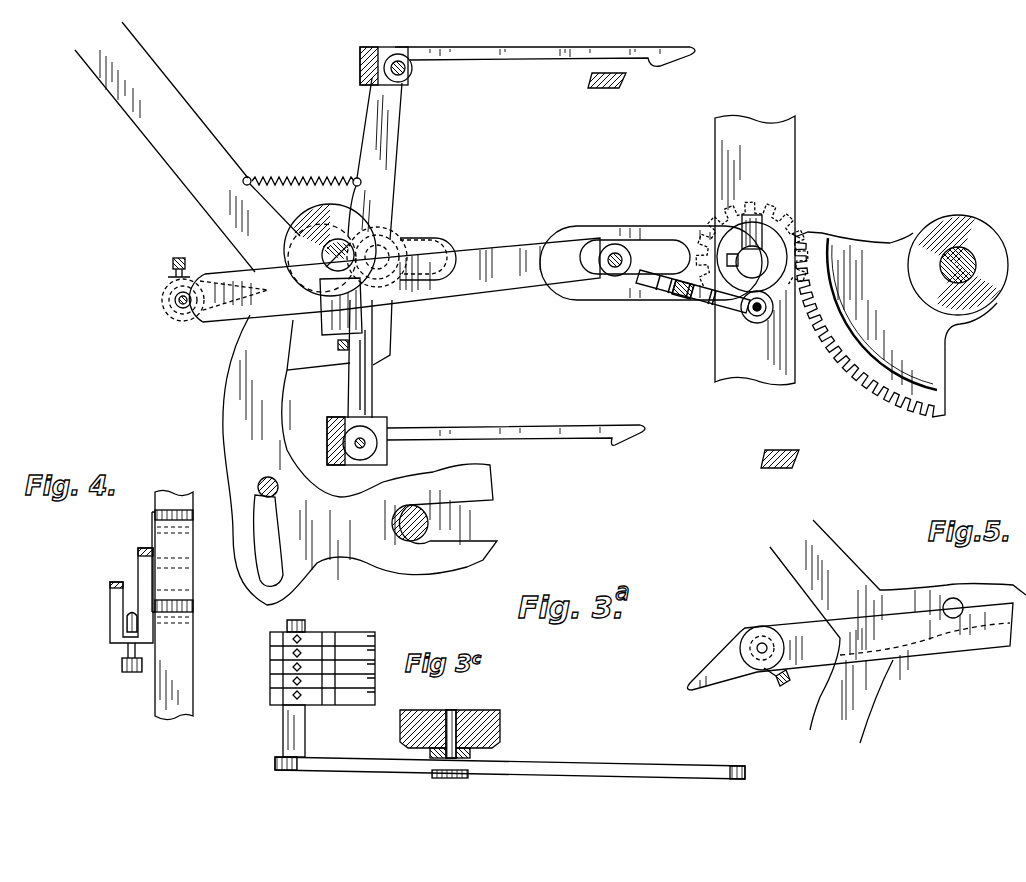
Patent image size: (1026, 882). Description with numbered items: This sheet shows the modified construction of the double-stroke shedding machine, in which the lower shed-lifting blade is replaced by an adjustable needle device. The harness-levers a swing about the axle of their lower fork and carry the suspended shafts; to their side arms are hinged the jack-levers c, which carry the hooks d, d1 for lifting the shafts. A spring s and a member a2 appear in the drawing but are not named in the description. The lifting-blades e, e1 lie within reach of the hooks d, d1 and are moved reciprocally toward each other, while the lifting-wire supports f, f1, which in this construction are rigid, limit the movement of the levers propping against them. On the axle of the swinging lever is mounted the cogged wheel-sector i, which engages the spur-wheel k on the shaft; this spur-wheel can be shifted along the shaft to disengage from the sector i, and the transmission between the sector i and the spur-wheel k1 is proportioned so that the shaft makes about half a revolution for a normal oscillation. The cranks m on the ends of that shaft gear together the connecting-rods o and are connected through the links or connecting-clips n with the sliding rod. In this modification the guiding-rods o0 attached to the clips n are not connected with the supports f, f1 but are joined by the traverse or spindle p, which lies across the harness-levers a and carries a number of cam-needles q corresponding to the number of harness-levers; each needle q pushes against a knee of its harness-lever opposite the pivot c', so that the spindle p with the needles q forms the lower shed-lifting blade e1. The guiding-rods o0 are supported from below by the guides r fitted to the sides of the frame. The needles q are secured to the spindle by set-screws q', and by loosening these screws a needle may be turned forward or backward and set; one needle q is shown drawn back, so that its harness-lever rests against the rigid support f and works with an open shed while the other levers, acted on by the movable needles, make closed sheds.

In FIG. 3A, the harness-lever a is at (187, 147).
In FIG. 3A, the spring s is at (314, 177).
In FIG. 3A, the jack-lever c is at (375, 248).
In FIG. 3A, the lifting-wire support f is at (375, 50).
In FIG. 3A, the hook d is at (614, 54).
In FIG. 3A, the lifting-blade e is at (605, 82).
In FIG. 3A, the pivot c' is at (372, 244).
In FIG. 3A, the connecting-rod o is at (498, 262).
In FIG. 3A, the link n is at (710, 305).
In FIG. 3A, the crank m is at (715, 208).
In FIG. 3A, the spur-wheel k is at (803, 233).
In FIG. 3A, the spur-wheel k1 is at (985, 262).
In FIG. 3A, the cogged wheel-sector i is at (896, 324).
In FIG. 3A, the pivot a2 is at (430, 522).
In FIG. 3A, the lifting-wire support f1 is at (388, 426).
In FIG. 3A, the hook d1 is at (527, 428).
In FIG. 3A, the lower shed-lifting blade e1 is at (780, 443).
In FIG. 3A, the traverse or spindle p is at (178, 310).
In FIG. 3C, the traverse or spindle p is at (300, 732).
In FIG. 5, the traverse or spindle p is at (760, 660).
In FIG. 3A, the cam-needle q is at (194, 300).
In FIG. 3C, the cam-needle q is at (338, 656).
In FIG. 5, the cam-needle q is at (850, 656).
In FIG. 3C, the set-screw q' is at (266, 667).
In FIG. 5, the set-screw q' is at (777, 700).
In FIG. 4, the guide r is at (117, 605).
In FIG. 3C, the guiding-rod o0 is at (372, 758).